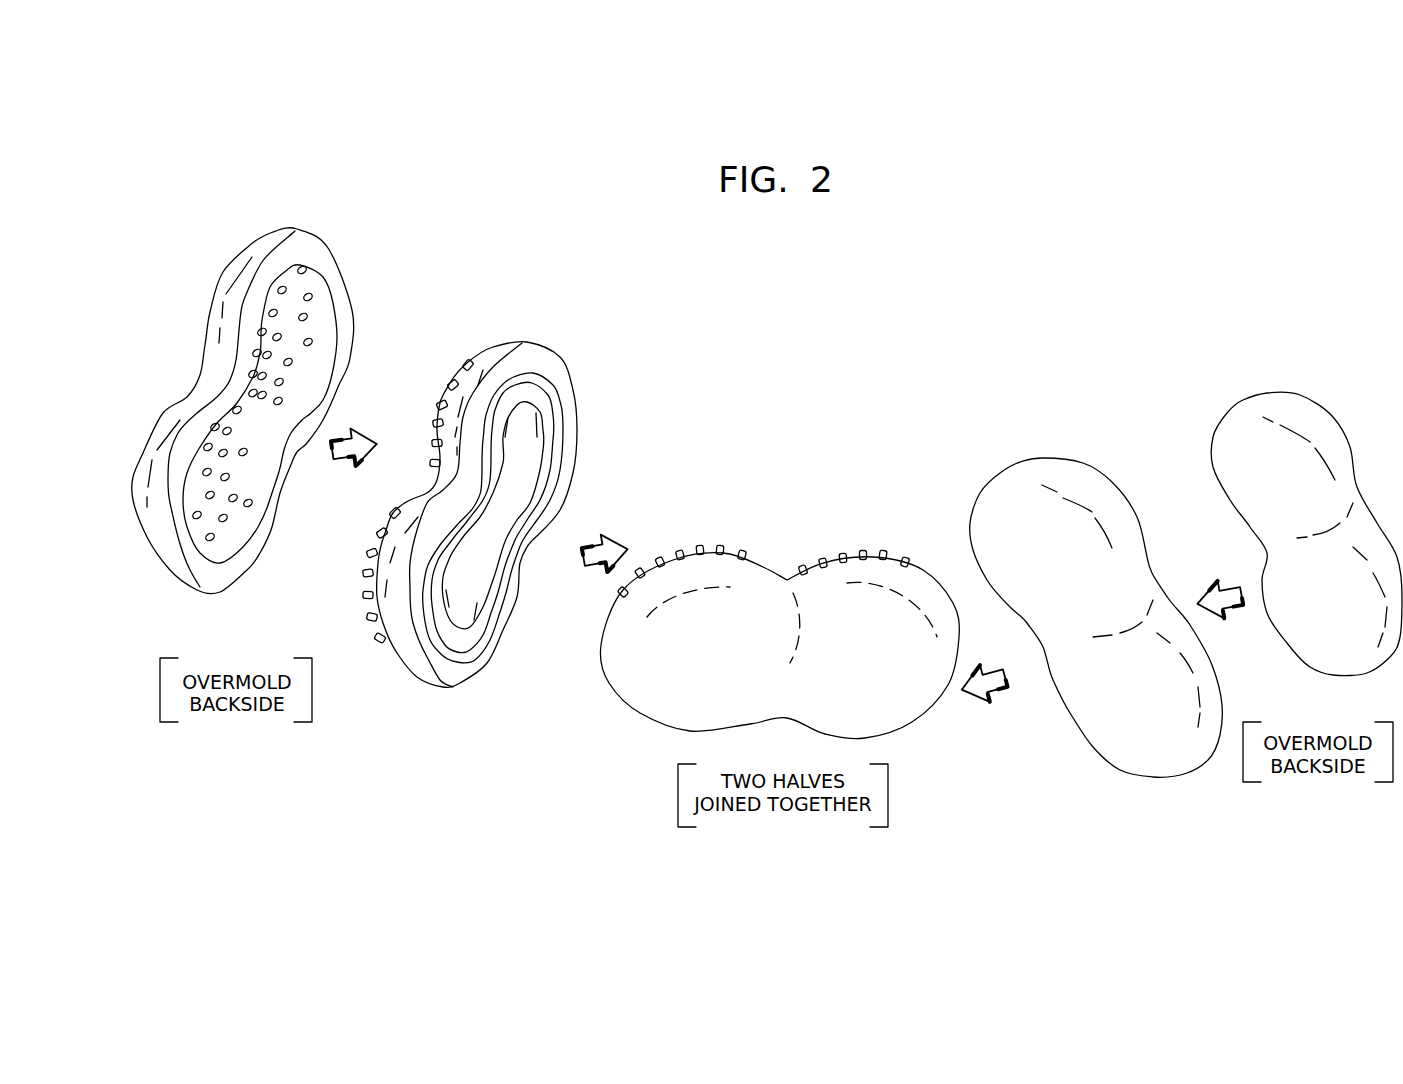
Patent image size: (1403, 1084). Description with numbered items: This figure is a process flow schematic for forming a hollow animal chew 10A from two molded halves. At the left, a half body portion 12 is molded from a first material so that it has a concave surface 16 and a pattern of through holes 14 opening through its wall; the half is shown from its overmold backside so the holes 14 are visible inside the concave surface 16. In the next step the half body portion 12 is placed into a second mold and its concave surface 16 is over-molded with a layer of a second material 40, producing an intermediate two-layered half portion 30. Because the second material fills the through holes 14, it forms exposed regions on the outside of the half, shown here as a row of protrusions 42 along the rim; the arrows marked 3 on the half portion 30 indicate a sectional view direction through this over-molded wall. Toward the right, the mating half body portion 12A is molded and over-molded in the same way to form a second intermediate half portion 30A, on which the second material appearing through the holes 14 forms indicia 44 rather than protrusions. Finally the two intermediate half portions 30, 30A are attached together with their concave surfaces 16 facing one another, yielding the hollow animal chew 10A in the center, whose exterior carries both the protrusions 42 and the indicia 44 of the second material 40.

The half body portion 12 is at (220, 347).
The through holes 14 is at (303, 315).
The concave surface 16 is at (255, 425).
The intermediate two-layered half portion 30 is at (407, 650).
The layer of second material 40 is at (537, 374).
The protrusions 42 is at (442, 400).
The section line for FIG. 3 is at (460, 280).
The hollow animal chew 10A is at (768, 515).
The indicia 44 is at (875, 713).
The intermediate two-layered half portion 30A is at (1072, 483).
The half body portion 12A is at (1260, 410).